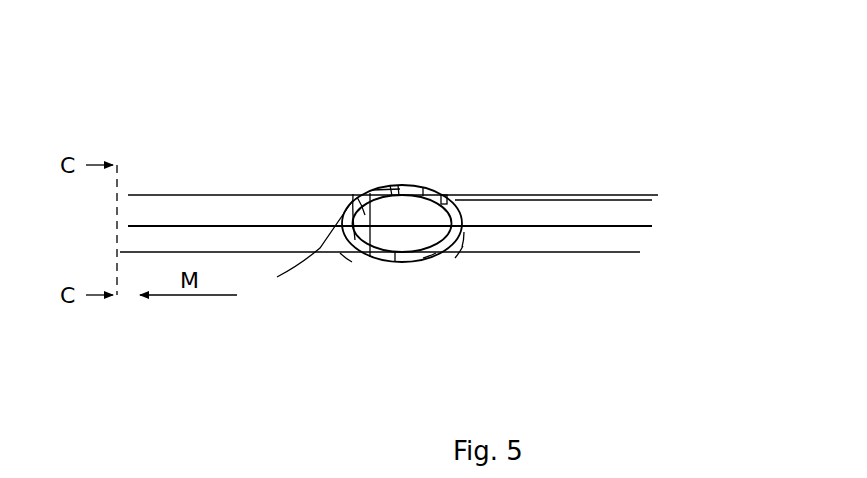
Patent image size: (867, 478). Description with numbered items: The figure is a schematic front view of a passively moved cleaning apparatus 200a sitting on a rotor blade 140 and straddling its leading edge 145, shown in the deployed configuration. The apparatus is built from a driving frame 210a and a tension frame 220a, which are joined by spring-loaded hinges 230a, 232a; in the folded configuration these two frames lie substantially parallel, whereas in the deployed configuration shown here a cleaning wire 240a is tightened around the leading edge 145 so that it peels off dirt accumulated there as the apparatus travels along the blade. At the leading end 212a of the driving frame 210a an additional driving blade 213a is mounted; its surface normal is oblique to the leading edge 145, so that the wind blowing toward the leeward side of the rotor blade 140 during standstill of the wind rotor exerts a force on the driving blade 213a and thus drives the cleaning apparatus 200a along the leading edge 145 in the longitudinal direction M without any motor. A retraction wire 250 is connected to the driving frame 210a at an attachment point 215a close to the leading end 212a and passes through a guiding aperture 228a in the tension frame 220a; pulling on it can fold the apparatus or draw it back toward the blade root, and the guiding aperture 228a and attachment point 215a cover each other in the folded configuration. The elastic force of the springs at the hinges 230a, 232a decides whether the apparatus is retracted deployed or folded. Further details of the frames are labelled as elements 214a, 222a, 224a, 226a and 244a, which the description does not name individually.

The rotor blade 140 is at (195, 207).
The leading edge 145 is at (627, 230).
The retraction wire 250 is at (608, 197).
The cleaning apparatus 200a is at (497, 105).
The driving frame 210a is at (350, 193).
The leading end 212a is at (340, 253).
The driving blade 213a is at (300, 247).
The ring portion 214a is at (390, 185).
The attachment point 215a is at (357, 197).
The tension frame 220a is at (455, 258).
The ring portion 222a is at (462, 247).
The ring portion 224a is at (423, 187).
The ring portion 226a is at (423, 258).
The guiding aperture 228a is at (458, 195).
The hinge 230a is at (398, 186).
The hinge 232a is at (394, 258).
The cleaning wire 240a is at (366, 250).
The partition portion 244a is at (373, 190).